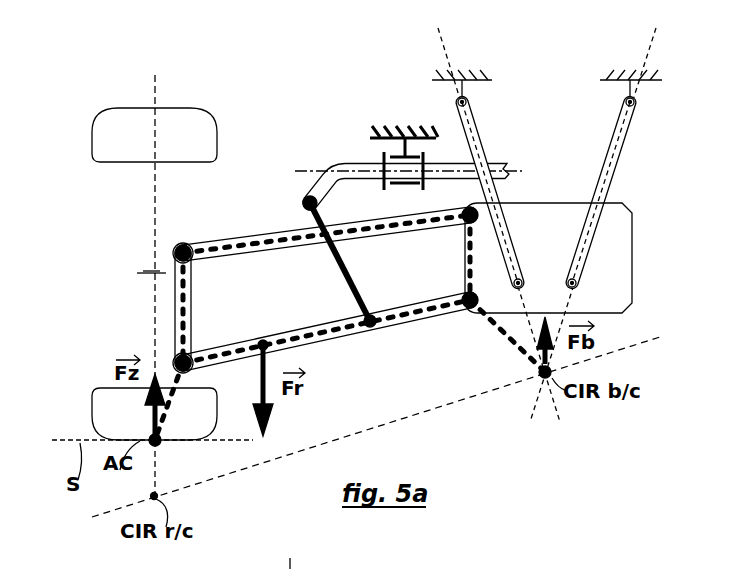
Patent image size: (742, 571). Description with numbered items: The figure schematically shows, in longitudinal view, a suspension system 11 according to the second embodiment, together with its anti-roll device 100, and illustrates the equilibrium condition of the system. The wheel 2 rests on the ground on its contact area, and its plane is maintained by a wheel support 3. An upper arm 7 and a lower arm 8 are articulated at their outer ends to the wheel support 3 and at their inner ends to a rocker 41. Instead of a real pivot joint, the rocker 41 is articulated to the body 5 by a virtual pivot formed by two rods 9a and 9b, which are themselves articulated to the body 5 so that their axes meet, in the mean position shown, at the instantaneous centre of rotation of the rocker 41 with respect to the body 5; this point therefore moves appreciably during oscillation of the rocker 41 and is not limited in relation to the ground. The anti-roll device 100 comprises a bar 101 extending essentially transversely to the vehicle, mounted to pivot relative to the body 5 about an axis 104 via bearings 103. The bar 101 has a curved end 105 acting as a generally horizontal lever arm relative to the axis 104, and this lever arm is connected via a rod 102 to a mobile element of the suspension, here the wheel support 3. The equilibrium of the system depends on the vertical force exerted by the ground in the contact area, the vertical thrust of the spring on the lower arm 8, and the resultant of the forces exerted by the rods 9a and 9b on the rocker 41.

The wheel 2 is at (92, 132).
The suspension assembly 11 is at (246, 117).
The anti-roll device 100 is at (316, 119).
The anti-roll bar 101 is at (350, 165).
The curved end 105 is at (305, 194).
The body 5 is at (410, 130).
The bearings 103 is at (407, 188).
The axis 104 is at (527, 169).
The rod 9a is at (480, 157).
The rod 9b is at (610, 186).
The rocker 41 is at (608, 276).
The upper arm 7 is at (344, 240).
The lower arm 8 is at (386, 306).
The wheel support 3 is at (185, 323).
The rod 102 is at (346, 283).